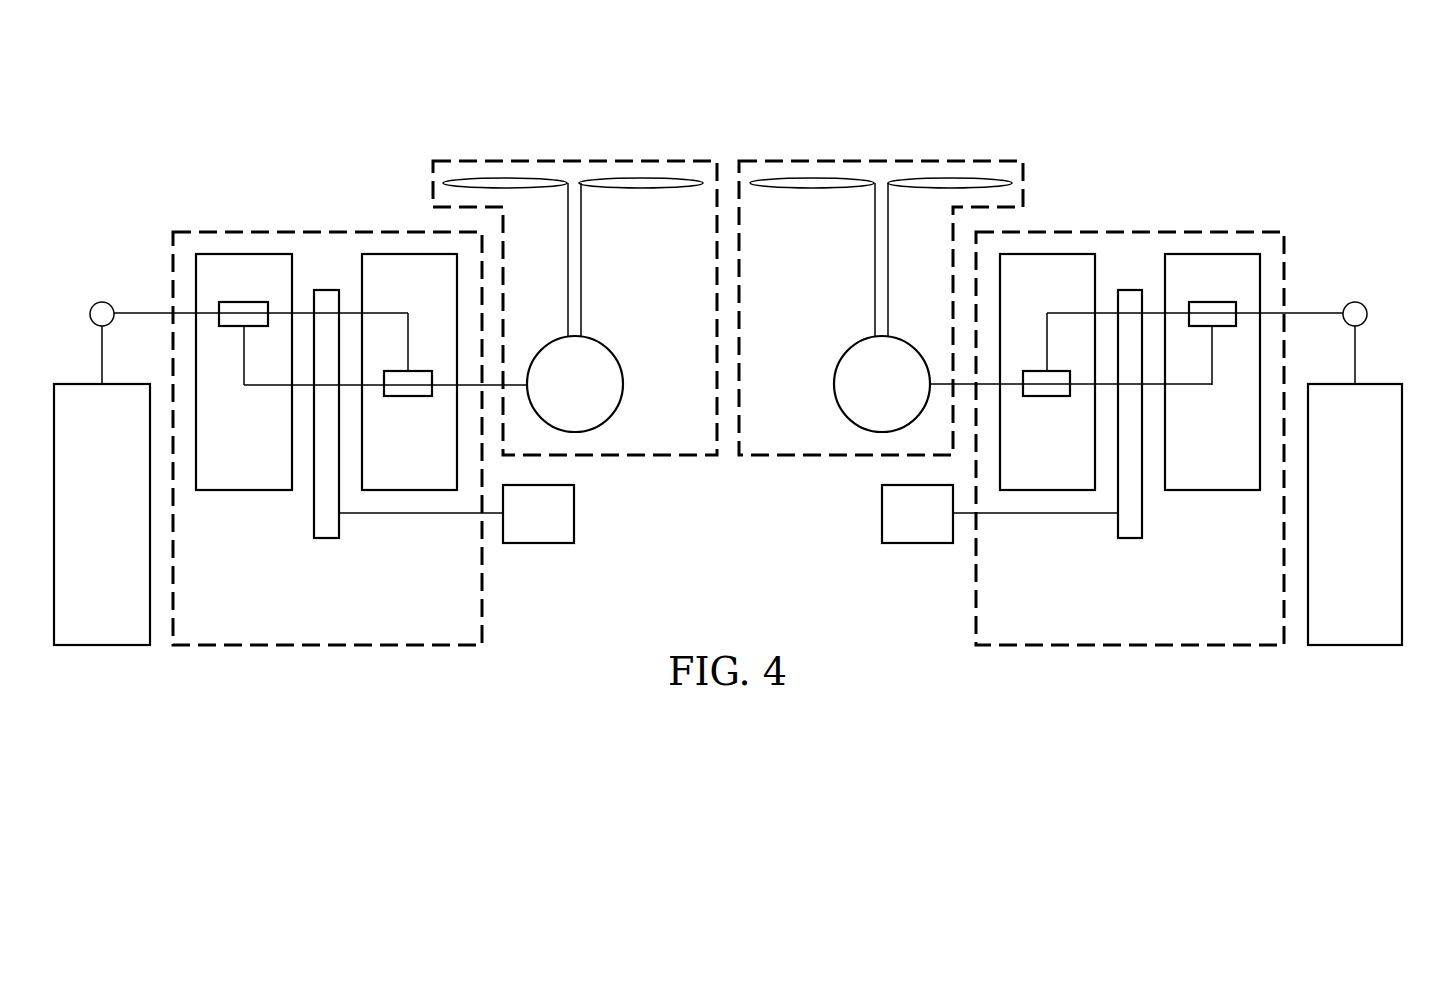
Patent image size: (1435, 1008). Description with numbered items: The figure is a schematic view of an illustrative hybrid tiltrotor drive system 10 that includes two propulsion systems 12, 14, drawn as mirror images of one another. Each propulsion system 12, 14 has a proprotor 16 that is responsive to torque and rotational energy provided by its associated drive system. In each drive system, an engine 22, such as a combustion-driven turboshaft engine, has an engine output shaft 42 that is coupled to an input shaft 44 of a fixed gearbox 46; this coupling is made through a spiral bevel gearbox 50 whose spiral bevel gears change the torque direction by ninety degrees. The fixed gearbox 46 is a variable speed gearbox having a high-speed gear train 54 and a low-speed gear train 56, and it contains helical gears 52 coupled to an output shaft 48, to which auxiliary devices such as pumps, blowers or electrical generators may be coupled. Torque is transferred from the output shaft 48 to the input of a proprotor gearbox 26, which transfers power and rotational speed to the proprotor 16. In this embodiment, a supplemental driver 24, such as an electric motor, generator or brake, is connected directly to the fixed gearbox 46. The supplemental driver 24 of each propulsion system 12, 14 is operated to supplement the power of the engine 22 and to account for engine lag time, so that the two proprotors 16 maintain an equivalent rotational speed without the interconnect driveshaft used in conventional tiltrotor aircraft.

The hybrid tiltrotor drive system 10 is at (554, 86).
The propulsion system 12 is at (296, 159).
The propulsion system 14 is at (1161, 157).
The proprotor 16 is at (629, 284).
The engine 22 is at (86, 532).
The supplemental driver 24 is at (522, 528).
The proprotor gearbox 26 is at (559, 399).
The engine output shaft 42 is at (1356, 352).
The input shaft 44 is at (1316, 313).
The fixed gearbox 46 is at (310, 607).
The output shaft 48 is at (965, 384).
The spiral bevel gearbox 50 is at (1365, 304).
The helical gears 52 is at (314, 520).
The high-speed gear train 54 is at (228, 453).
The low-speed gear train 56 is at (392, 453).